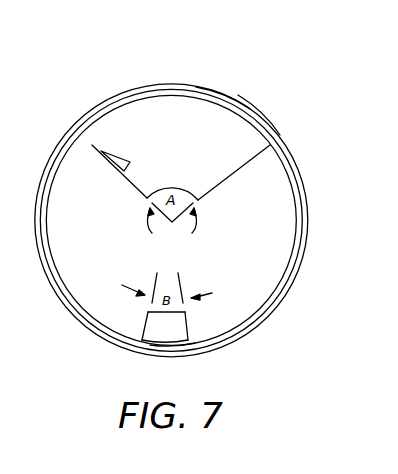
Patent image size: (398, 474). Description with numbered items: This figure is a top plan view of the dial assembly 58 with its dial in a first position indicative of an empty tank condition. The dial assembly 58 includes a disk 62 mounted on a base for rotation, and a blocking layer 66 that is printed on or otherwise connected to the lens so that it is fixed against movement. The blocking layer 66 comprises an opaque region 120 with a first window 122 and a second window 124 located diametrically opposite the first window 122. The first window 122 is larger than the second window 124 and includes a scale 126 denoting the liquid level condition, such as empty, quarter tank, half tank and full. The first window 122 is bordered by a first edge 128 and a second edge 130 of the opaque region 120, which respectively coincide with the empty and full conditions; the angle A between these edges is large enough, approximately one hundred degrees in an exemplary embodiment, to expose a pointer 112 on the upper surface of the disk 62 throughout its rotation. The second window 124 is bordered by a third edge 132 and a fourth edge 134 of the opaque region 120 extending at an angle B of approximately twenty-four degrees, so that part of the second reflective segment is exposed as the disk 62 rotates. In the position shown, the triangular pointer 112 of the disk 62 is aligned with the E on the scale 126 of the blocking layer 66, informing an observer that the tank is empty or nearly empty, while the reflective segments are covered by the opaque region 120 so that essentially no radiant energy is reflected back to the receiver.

The dial assembly 58 is at (75, 115).
The blocking layer 66 is at (65, 172).
The opaque region 120 is at (278, 256).
The disk 62 is at (218, 92).
The first window 122 is at (259, 122).
The scale 126 is at (205, 122).
The pointer 112 is at (113, 151).
The first edge 128 is at (135, 185).
The second edge 130 is at (229, 178).
The fourth edge 134 is at (145, 321).
The third edge 132 is at (188, 325).
The second window 124 is at (194, 338).